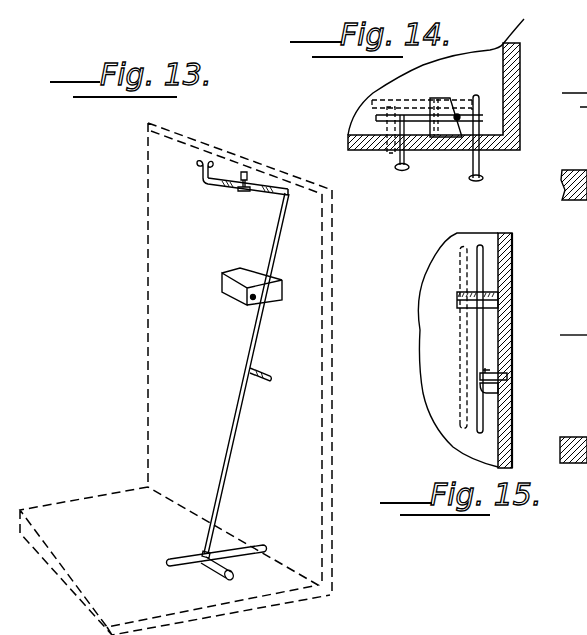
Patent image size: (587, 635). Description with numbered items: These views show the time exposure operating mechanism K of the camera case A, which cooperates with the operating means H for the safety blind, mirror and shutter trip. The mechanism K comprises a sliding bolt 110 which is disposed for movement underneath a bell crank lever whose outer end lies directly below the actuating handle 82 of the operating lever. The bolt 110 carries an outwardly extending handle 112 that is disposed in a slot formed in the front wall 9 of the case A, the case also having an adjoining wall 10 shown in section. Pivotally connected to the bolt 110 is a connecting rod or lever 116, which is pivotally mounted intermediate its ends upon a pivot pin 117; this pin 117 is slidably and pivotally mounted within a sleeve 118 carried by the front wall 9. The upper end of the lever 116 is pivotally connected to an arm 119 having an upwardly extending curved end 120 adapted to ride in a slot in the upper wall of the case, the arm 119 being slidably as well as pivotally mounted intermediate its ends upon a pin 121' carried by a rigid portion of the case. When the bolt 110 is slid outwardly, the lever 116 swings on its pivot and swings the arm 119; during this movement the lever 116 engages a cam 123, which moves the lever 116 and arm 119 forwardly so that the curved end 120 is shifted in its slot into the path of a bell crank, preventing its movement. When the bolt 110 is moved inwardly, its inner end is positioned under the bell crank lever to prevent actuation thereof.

In FIG. 13, the connecting rod or lever 116 is at (238, 417).
In FIG. 14, the connecting rod or lever 116 is at (460, 117).
In FIG. 15, the connecting rod or lever 116 is at (478, 351).
In FIG. 13, the upwardly extending curved end 120 is at (195, 172).
In FIG. 13, the arm 119 is at (231, 178).
In FIG. 13, the pin 121' is at (279, 169).
In FIG. 13, the cam 123 is at (272, 291).
In FIG. 14, the cam 123 is at (444, 138).
In FIG. 15, the cam 123 is at (490, 318).
In FIG. 13, the pivot pin 117 is at (262, 374).
In FIG. 15, the pivot pin 117 is at (508, 377).
In FIG. 13, the time exposure operating mechanism K is at (247, 383).
In FIG. 13, the means for operating the safety blind, image reflecting mirror and shutter trip m H is at (326, 413).
In FIG. 13, the sliding bolt 110 is at (242, 549).
In FIG. 14, the sliding bolt 110 is at (412, 117).
In FIG. 13, the handle 112 is at (207, 566).
In FIG. 14, the handle 112 is at (406, 166).
In FIG. 14, the case A is at (440, 81).
In FIG. 15, the case A is at (432, 313).
In FIG. 14, the wall 10 is at (520, 74).
In FIG. 14, the actuating handle 82 is at (482, 172).
In FIG. 14, the front wall 9 is at (357, 146).
In FIG. 15, the front wall 9 is at (508, 281).
In FIG. 15, the sleeve 118 is at (487, 394).